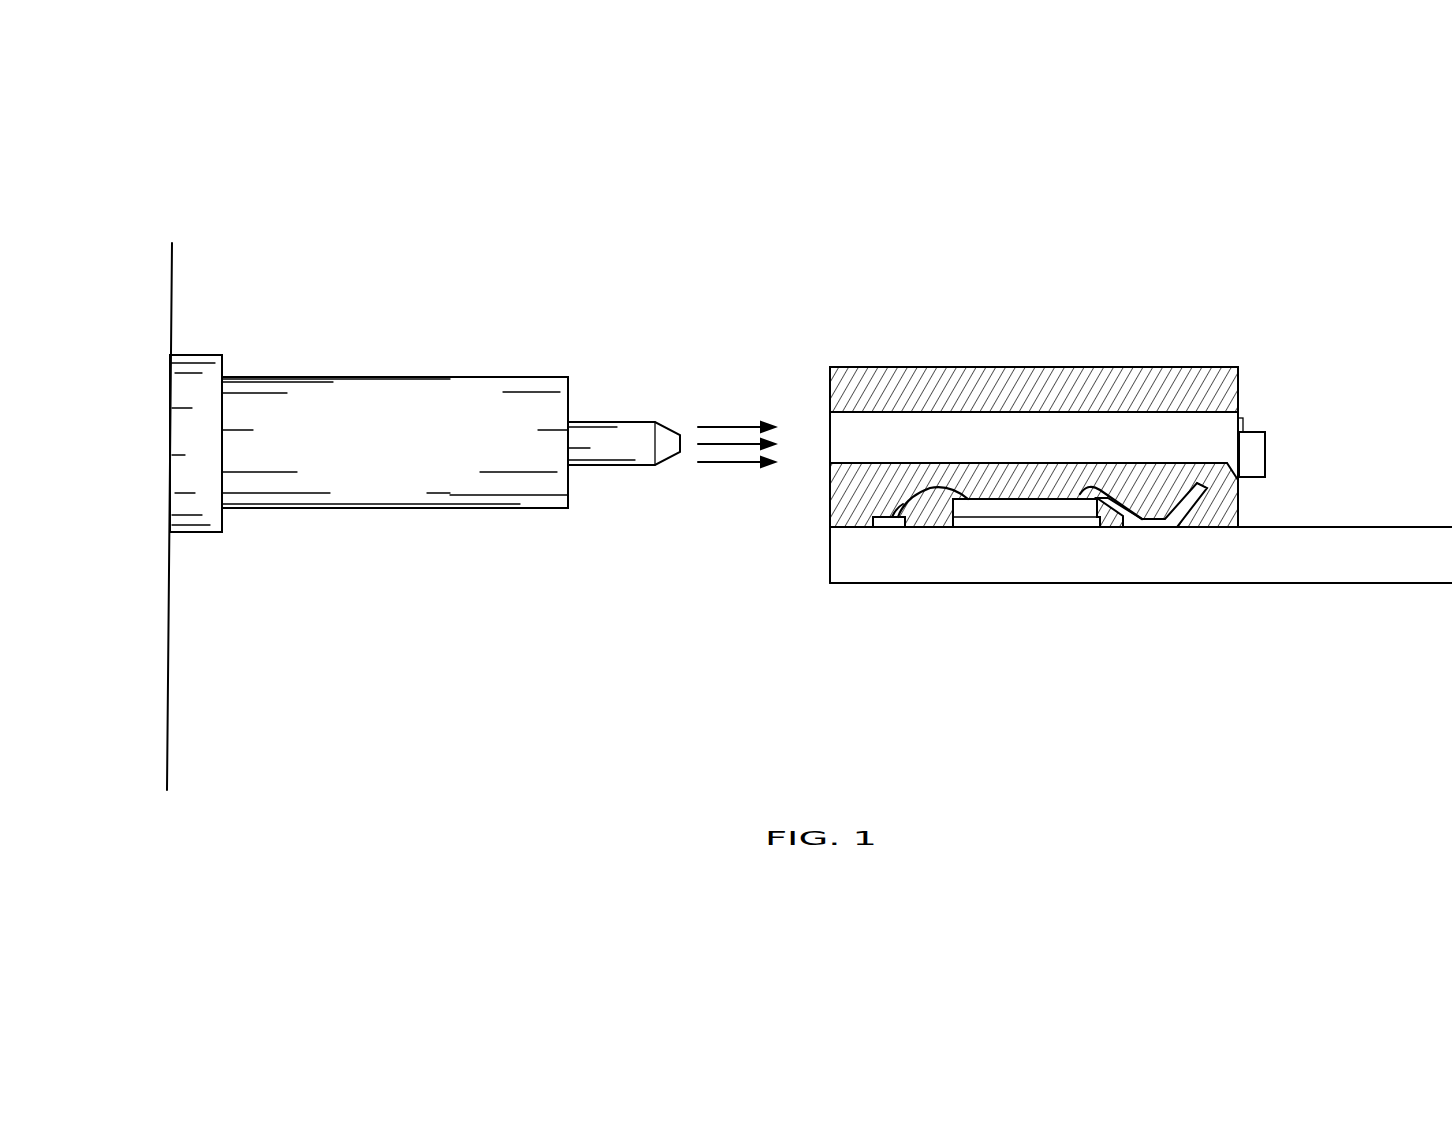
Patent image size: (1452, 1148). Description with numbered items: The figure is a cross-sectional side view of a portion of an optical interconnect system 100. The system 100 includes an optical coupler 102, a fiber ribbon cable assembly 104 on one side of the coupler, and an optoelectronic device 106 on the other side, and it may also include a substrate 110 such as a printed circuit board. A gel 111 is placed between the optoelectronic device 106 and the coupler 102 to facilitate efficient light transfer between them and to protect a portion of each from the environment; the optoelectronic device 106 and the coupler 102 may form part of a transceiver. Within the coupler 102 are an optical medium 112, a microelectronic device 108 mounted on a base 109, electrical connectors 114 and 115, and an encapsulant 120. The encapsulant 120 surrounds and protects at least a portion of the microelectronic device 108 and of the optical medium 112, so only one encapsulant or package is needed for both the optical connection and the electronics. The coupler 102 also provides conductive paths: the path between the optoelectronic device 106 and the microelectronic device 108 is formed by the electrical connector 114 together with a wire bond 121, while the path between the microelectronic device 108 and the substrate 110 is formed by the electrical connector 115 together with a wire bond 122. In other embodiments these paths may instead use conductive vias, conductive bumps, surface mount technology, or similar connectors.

The optical interconnect system 100 is at (795, 173).
The optical coupler 102 is at (830, 368).
The fiber ribbon cable assembly 104 is at (318, 322).
The optoelectronic device 106 is at (1262, 457).
The microelectronic device 108 is at (970, 517).
The base 109 is at (1045, 522).
The substrate 110 is at (1003, 570).
The gel 111 is at (1243, 425).
The optical medium 112 is at (834, 437).
The electrical connector 114 is at (1198, 492).
The electrical connector 115 is at (877, 528).
The encapsulant 120 is at (917, 483).
The wire bond 121 is at (1107, 467).
The wire bond 122 is at (900, 517).